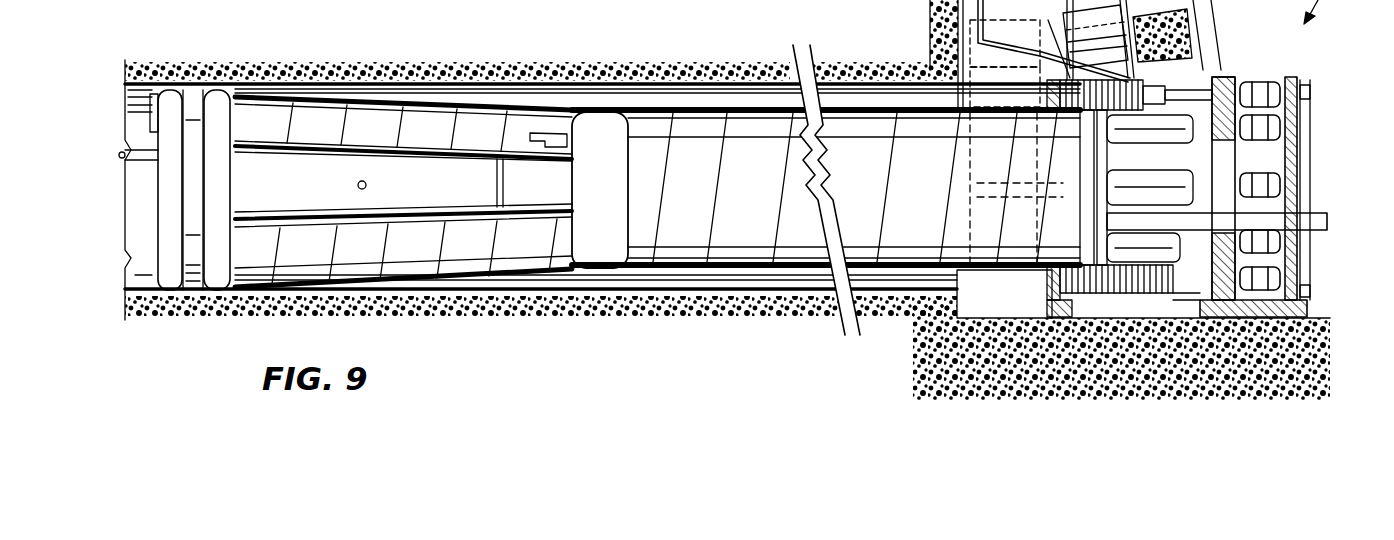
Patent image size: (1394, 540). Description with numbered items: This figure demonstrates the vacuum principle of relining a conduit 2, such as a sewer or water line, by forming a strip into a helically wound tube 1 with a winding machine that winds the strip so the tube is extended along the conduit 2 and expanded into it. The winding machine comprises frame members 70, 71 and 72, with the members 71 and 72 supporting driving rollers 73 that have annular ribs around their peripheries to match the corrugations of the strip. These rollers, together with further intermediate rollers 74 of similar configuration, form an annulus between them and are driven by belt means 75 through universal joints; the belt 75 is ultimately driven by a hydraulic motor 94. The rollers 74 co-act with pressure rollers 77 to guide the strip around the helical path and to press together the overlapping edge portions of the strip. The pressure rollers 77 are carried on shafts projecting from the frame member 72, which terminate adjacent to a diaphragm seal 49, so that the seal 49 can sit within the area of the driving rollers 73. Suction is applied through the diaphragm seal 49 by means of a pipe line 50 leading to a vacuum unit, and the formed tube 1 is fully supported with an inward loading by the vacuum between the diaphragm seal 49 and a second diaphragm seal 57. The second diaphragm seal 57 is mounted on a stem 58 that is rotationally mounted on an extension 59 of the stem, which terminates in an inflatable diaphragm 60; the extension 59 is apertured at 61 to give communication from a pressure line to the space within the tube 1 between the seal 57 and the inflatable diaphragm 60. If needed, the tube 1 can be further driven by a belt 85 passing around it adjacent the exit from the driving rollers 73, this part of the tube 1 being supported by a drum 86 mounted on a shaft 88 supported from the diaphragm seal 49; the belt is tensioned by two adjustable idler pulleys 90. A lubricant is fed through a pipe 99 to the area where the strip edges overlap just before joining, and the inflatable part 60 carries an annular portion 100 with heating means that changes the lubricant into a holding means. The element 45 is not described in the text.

The helically wound tube 1 is at (690, 110).
The conduit 2 is at (367, 78).
The soil backfill 45 is at (498, 324).
The diaphragm seal 49 is at (945, 397).
The pipe line 50 is at (1328, 222).
The second diaphragm seal 57 is at (598, 250).
The stem 58 is at (543, 200).
The extension of the stem 59 is at (298, 200).
The inflatable diaphragm 60 is at (208, 112).
The aperture 61 is at (366, 185).
The frame member 70 is at (1291, 76).
The frame member 71 is at (1060, 307).
The frame member 72 is at (1224, 78).
The driving rollers 73 is at (730, 11).
The intermediate rollers 74 is at (1130, 300).
The belt means 75 is at (1312, 162).
The pressure rollers 77 is at (1177, 397).
The belt 85 is at (1099, 41).
The drum 86 is at (972, 150).
The shaft 88 is at (992, 188).
The idler pulleys 90 is at (1021, 104).
The hydraulic motor 94 is at (1262, 160).
The pipe 99 is at (957, 42).
The annular portion 100 is at (191, 108).